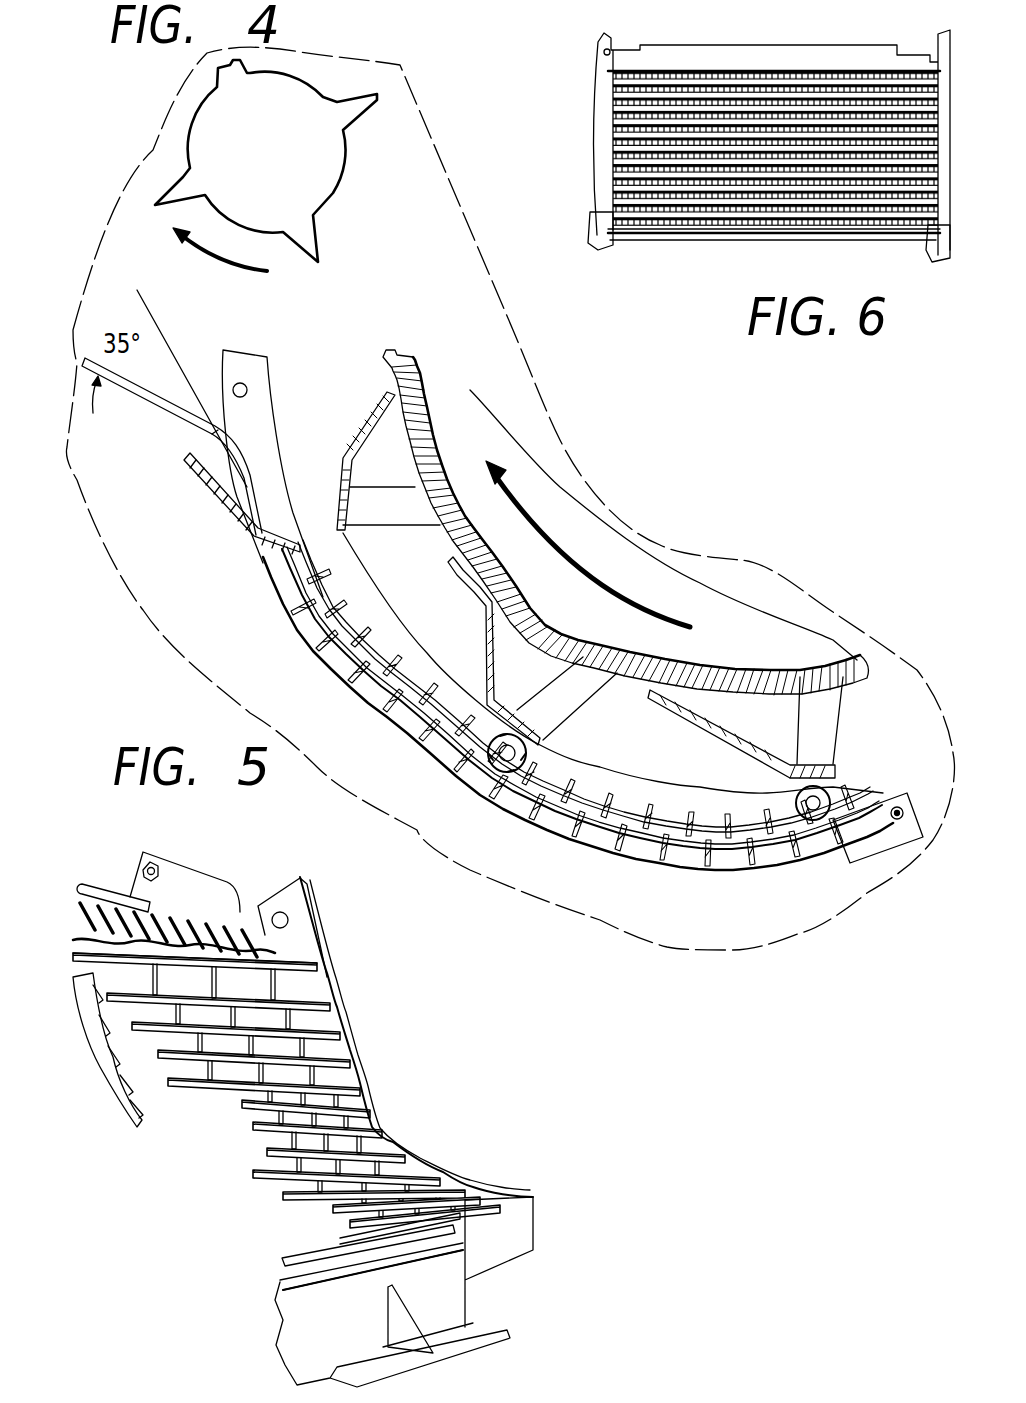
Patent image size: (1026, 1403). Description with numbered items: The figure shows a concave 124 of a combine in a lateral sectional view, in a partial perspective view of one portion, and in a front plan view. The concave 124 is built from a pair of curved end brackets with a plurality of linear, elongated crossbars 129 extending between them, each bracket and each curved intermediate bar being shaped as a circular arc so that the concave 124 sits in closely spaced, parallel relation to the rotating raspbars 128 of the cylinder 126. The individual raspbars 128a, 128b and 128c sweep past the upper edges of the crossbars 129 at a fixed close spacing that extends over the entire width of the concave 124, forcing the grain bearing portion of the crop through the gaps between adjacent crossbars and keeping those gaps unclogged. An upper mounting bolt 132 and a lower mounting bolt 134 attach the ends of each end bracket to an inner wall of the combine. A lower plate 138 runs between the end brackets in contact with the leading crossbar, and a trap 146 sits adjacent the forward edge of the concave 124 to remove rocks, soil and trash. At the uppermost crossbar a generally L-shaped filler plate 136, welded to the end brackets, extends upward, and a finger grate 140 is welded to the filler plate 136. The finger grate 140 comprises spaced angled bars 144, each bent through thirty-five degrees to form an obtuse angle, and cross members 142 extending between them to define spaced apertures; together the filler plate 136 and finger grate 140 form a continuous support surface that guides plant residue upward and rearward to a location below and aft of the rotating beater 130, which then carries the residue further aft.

In FIG. 4, the concave 124 is at (640, 870).
In FIG. 6, the concave 124 is at (720, 240).
In FIG. 5, the concave 124 is at (355, 1036).
In FIG. 4, the cylinder 126 is at (257, 370).
In FIG. 5, the cylinder 126 is at (287, 907).
In FIG. 4, the raspbars 128 is at (437, 405).
In FIG. 4, the raspbar 128a is at (373, 420).
In FIG. 4, the raspbar 128b is at (483, 595).
In FIG. 4, the raspbar 128c is at (747, 740).
In FIG. 5, the crossbars 129 is at (367, 1123).
In FIG. 4, the beater 130 is at (339, 206).
In FIG. 4, the upper mounting bolt 132 is at (200, 310).
In FIG. 4, the lower mounting bolt 134 is at (908, 777).
In FIG. 4, the filler plate 136 is at (237, 510).
In FIG. 5, the filler plate 136 is at (267, 962).
In FIG. 4, the lower plate 138 is at (857, 837).
In FIG. 4, the finger grate 140 is at (177, 424).
In FIG. 5, the finger grate 140 is at (90, 880).
In FIG. 5, the cross members 142 is at (183, 903).
In FIG. 4, the angled bars 144 is at (200, 433).
In FIG. 5, the angled bars 144 is at (273, 960).
In FIG. 5, the trap 146 is at (303, 1253).